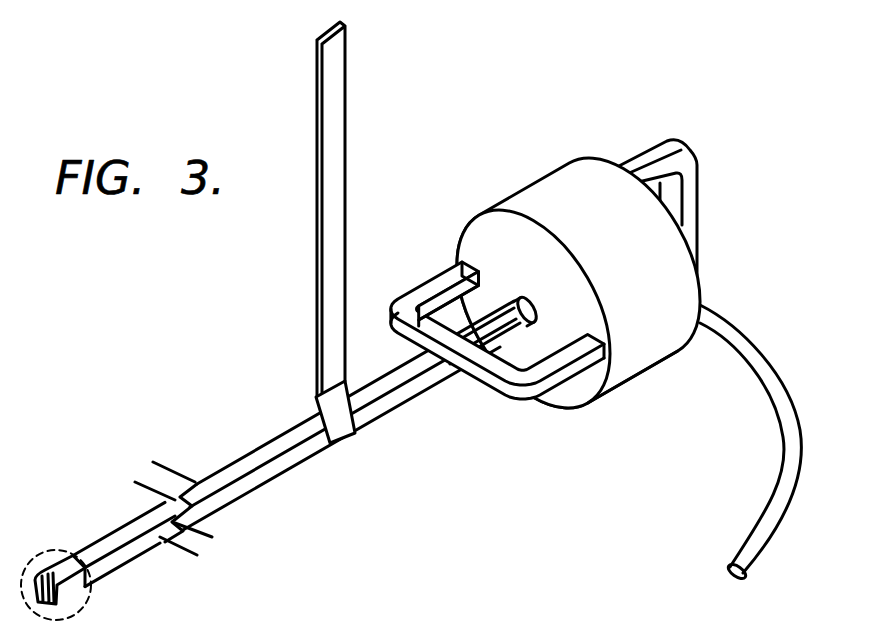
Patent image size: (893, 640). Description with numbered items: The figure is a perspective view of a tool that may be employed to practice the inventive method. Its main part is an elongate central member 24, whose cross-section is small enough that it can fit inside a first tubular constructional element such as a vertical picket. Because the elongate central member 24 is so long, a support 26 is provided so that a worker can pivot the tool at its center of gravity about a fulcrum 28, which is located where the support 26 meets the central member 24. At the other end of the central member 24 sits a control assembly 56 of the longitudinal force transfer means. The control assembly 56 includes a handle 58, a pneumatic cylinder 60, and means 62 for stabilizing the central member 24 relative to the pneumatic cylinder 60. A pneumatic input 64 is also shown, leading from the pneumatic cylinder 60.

The elongate central member 24 is at (246, 458).
The support 26 is at (337, 126).
The fulcrum 28 is at (338, 427).
The control assembly 56 is at (535, 168).
The handle 58 is at (703, 143).
The pneumatic cylinder 60 is at (643, 350).
The means for stabilizing central member 62 is at (497, 396).
The pneumatic input 64 is at (733, 330).